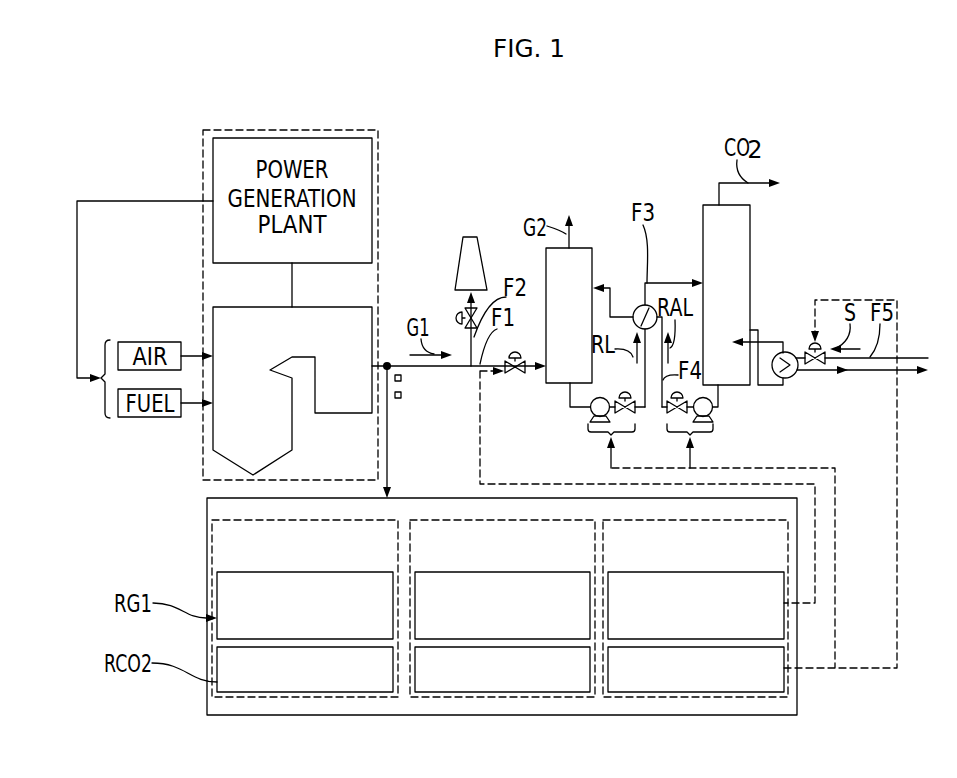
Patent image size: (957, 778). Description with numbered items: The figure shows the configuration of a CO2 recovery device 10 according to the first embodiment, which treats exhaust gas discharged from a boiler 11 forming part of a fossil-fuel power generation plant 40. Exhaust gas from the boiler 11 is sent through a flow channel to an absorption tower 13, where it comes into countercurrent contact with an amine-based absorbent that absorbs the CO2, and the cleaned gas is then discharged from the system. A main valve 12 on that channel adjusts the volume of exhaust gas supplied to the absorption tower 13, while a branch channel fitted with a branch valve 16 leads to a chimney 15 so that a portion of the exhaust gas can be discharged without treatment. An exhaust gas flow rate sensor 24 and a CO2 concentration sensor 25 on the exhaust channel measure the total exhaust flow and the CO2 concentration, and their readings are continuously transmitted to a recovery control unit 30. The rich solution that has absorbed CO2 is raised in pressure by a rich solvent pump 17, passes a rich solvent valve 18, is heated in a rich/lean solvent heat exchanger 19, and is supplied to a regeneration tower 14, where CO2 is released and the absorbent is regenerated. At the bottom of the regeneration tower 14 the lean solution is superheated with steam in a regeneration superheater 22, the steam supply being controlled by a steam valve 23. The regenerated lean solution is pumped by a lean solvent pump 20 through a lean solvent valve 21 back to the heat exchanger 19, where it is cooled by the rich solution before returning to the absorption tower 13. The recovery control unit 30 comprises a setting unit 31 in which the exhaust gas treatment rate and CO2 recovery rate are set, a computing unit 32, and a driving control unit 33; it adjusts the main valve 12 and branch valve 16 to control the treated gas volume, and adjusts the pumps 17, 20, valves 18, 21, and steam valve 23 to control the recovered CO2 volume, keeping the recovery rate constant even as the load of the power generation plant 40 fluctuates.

The CO2 recovery device 10 is at (533, 186).
The boiler 11 is at (372, 307).
The main valve 12 is at (516, 352).
The absorption tower 13 is at (592, 270).
The regeneration tower 14 is at (702, 265).
The chimney 15 is at (458, 262).
The branch valve 16 is at (455, 318).
The rich solvent pump 17 is at (590, 413).
The rich solvent valve 18 is at (570, 407).
The rich/lean solvent heat exchanger 19 is at (638, 307).
The lean solvent pump 20 is at (716, 421).
The lean solvent valve 21 is at (712, 400).
The regeneration superheater 22 is at (794, 376).
The steam valve 23 is at (808, 343).
The exhaust gas flow rate sensor 24 is at (402, 378).
The CO2 concentration sensor 25 is at (402, 395).
The recovery control unit 30 is at (196, 557).
The setting unit 31 is at (305, 697).
The computing unit 32 is at (502, 697).
The driving control unit 33 is at (698, 697).
The power generation plant 40 is at (332, 129).